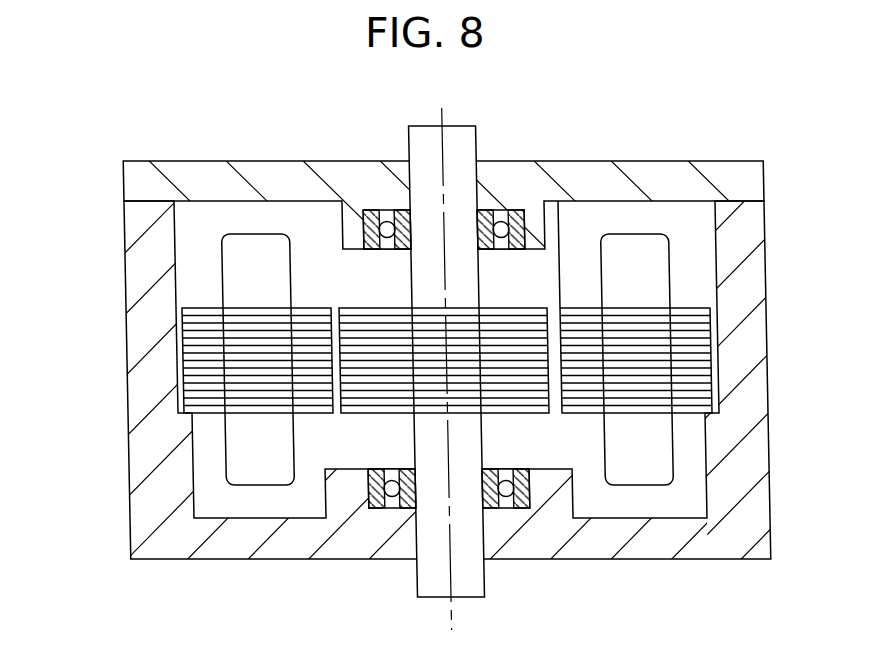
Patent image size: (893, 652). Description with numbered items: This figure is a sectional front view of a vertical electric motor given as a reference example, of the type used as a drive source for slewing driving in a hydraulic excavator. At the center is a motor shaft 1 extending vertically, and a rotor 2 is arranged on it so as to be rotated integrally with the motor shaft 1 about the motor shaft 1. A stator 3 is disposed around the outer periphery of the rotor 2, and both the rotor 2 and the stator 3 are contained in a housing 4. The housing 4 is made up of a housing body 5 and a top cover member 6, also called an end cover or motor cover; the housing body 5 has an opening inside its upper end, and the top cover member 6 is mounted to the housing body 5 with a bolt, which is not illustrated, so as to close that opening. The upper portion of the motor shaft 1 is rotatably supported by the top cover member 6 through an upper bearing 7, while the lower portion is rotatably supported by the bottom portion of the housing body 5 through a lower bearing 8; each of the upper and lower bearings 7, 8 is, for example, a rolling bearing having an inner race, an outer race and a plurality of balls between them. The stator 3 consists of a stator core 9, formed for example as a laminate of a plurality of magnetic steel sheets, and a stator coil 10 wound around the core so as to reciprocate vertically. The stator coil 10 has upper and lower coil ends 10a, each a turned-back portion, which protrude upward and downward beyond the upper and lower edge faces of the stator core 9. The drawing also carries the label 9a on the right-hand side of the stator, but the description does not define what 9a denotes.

The motor shaft 1 is at (421, 125).
The rotor 2 is at (526, 308).
The stator 3 is at (372, 364).
The housing 4 is at (446, 350).
The housing body 5 is at (826, 158).
The top cover member 6 is at (458, 200).
The upper bearing 7 is at (513, 210).
The lower bearing 8 is at (377, 510).
The stator core 9 is at (185, 328).
The stator tooth (right) 9a is at (633, 242).
The stator coil 10 is at (181, 364).
The coil end 10a is at (250, 242).